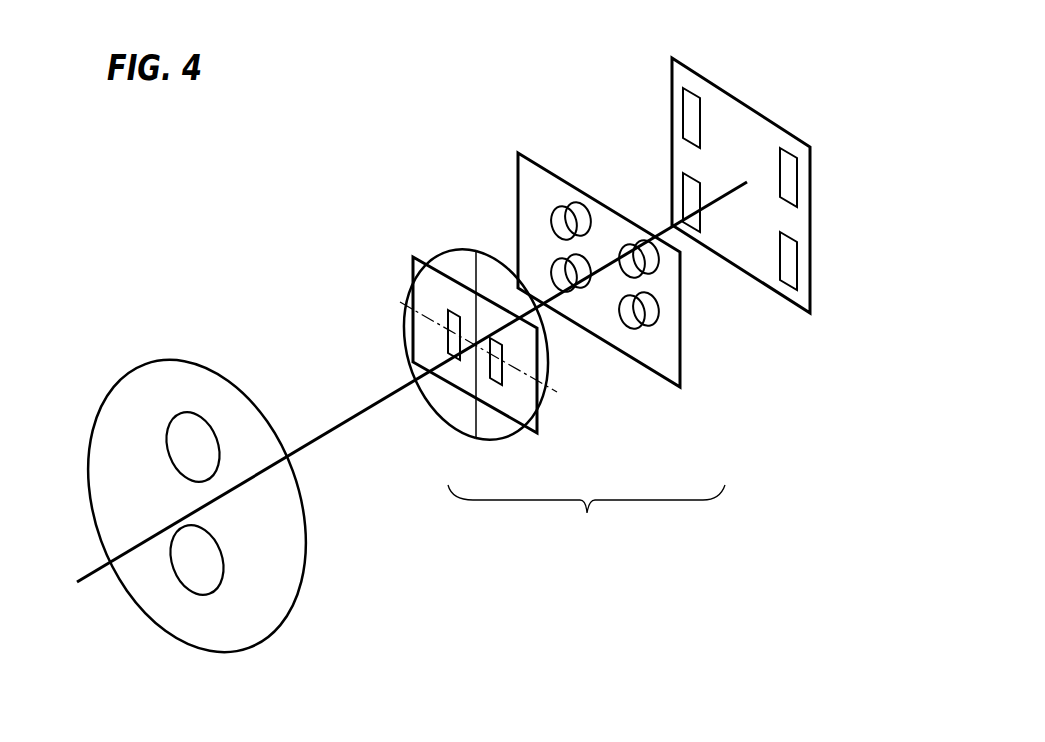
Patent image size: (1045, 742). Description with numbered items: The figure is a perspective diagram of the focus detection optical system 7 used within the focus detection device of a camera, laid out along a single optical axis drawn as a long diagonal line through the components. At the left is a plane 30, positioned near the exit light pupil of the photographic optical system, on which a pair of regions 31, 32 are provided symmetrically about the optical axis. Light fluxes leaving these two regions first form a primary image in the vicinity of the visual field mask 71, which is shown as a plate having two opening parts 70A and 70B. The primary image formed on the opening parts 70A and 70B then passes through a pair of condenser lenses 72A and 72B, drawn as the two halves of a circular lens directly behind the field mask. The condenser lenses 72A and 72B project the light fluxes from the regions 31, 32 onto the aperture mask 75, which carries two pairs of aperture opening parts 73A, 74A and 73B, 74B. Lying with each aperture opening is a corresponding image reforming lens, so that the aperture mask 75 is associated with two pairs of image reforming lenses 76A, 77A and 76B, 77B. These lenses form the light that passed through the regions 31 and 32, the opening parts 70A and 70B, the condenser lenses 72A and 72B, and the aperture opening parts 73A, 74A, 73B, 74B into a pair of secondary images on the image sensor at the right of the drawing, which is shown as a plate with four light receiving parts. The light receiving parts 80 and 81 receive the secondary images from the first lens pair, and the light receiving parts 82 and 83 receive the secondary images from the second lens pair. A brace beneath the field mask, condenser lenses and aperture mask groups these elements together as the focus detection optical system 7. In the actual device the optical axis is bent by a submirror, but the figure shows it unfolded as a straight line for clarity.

The focus detection optical system 7 is at (586, 517).
The plane 30 is at (137, 380).
The region 31 is at (192, 590).
The region 32 is at (210, 423).
The opening part 70A is at (443, 321).
The opening part 70B is at (497, 386).
The visual field mask 71 is at (430, 343).
The condenser lens 72A is at (440, 395).
The condenser lens 72B is at (512, 428).
The aperture opening part 73A is at (553, 207).
The aperture opening part 73B is at (623, 246).
The aperture opening part 74A is at (551, 267).
The aperture opening part 74B is at (636, 331).
The aperture mask 75 is at (518, 178).
The image reforming lens 76A is at (576, 203).
The image reforming lens 76B is at (652, 273).
The image reforming lens 77A is at (581, 290).
The image reforming lens 77B is at (657, 317).
The light receiving part 80 is at (682, 103).
The light receiving part 81 is at (682, 178).
The light receiving part 82 is at (797, 185).
The light receiving part 83 is at (797, 262).